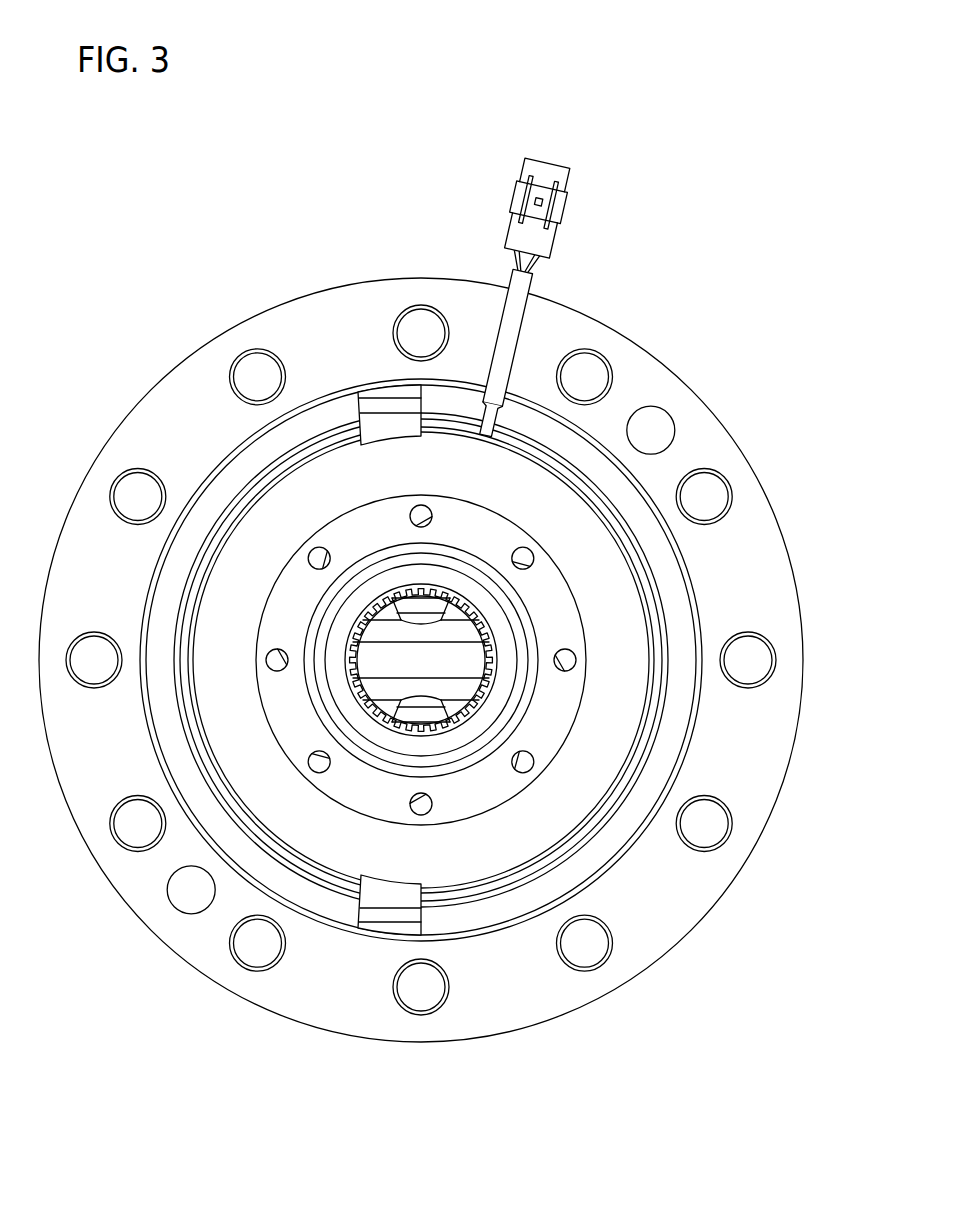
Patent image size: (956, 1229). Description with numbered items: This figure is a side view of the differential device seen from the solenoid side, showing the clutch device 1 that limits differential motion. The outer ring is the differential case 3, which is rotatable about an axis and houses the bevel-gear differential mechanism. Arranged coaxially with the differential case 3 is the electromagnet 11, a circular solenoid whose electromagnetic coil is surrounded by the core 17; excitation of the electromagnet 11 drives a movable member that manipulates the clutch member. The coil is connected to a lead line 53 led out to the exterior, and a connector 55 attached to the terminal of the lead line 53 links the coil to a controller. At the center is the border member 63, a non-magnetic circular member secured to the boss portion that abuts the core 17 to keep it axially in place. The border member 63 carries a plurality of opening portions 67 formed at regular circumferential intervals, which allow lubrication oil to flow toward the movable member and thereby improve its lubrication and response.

The clutch device 1 is at (458, 143).
The differential case 3 is at (323, 289).
The electromagnet 11 is at (652, 617).
The core 17 is at (612, 725).
The lead line 53 is at (545, 268).
The connector 55 is at (575, 209).
The border member 63 is at (517, 518).
The opening portions 67 is at (272, 665).